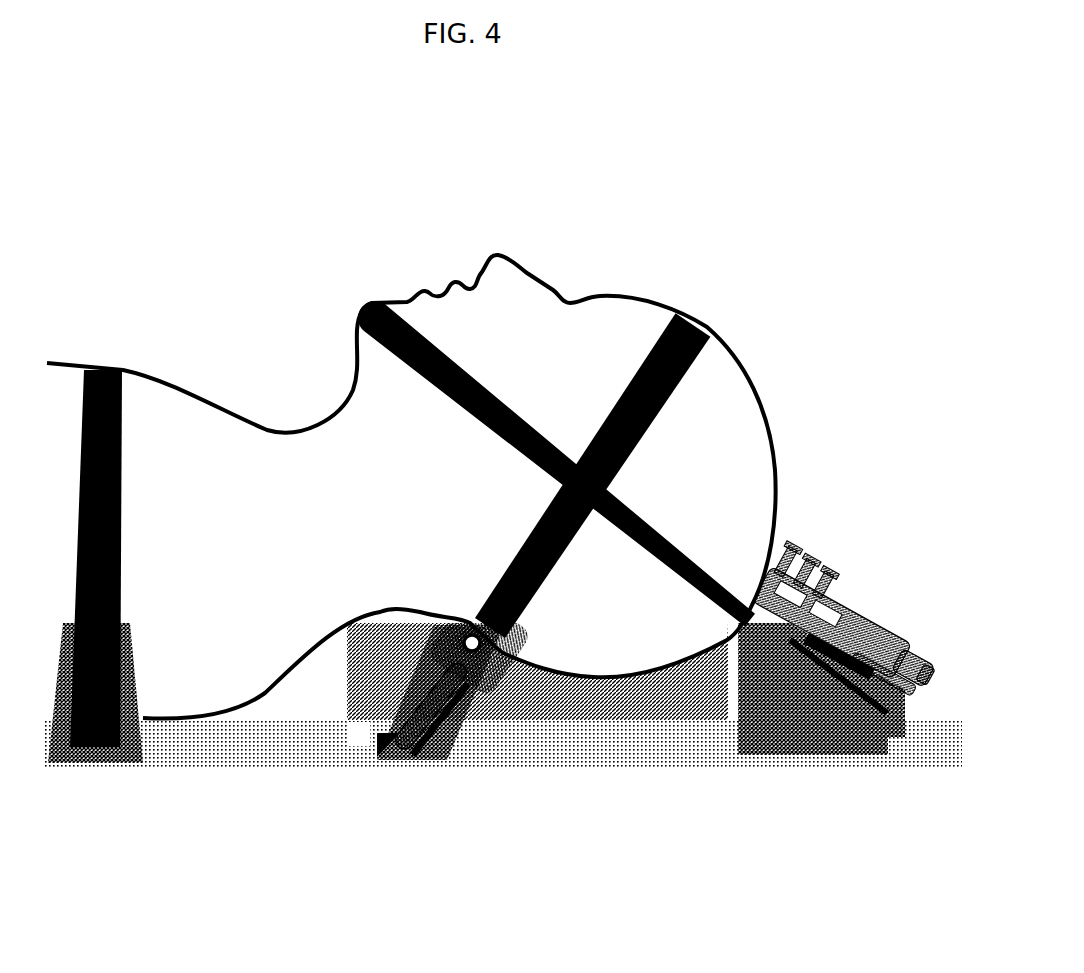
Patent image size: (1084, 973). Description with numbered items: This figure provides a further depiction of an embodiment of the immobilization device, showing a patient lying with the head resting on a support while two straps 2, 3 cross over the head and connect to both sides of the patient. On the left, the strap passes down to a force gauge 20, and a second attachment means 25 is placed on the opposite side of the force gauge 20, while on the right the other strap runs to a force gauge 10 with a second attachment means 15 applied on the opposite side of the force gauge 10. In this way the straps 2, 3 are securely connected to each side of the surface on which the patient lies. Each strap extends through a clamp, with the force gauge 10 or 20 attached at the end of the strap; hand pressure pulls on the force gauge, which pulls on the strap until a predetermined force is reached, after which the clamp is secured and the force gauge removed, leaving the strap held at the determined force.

The strap 2 is at (712, 311).
The strap 3 is at (355, 306).
The force gauge 10 is at (800, 740).
The second attachment means 15 is at (883, 695).
The force gauge 20 is at (443, 743).
The second attachment means 25 is at (358, 733).